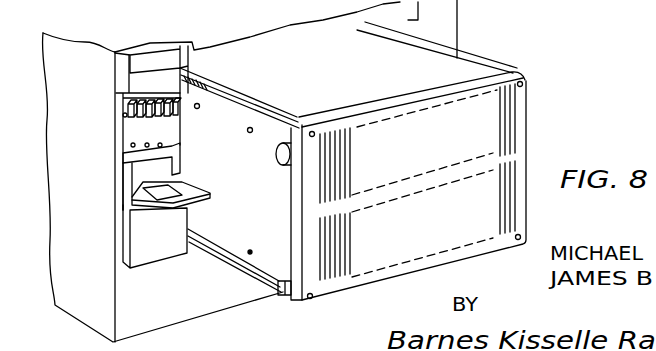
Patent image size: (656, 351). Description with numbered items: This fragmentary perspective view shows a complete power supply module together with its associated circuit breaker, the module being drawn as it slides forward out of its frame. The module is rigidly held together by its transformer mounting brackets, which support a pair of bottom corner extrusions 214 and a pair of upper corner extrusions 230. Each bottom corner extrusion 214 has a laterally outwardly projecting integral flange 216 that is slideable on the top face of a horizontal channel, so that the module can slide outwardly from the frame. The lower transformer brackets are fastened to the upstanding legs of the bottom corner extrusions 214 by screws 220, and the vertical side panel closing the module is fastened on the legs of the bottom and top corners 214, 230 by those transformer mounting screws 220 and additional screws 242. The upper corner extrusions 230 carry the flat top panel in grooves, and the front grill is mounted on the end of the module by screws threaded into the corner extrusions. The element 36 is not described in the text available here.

The wall 36 is at (118, 238).
The upper corner extrusion 230 is at (249, 107).
The screw 220 is at (199, 225).
The additional screw 242 is at (252, 251).
The integral flange 216 is at (236, 266).
The bottom corner extrusion 214 is at (288, 298).